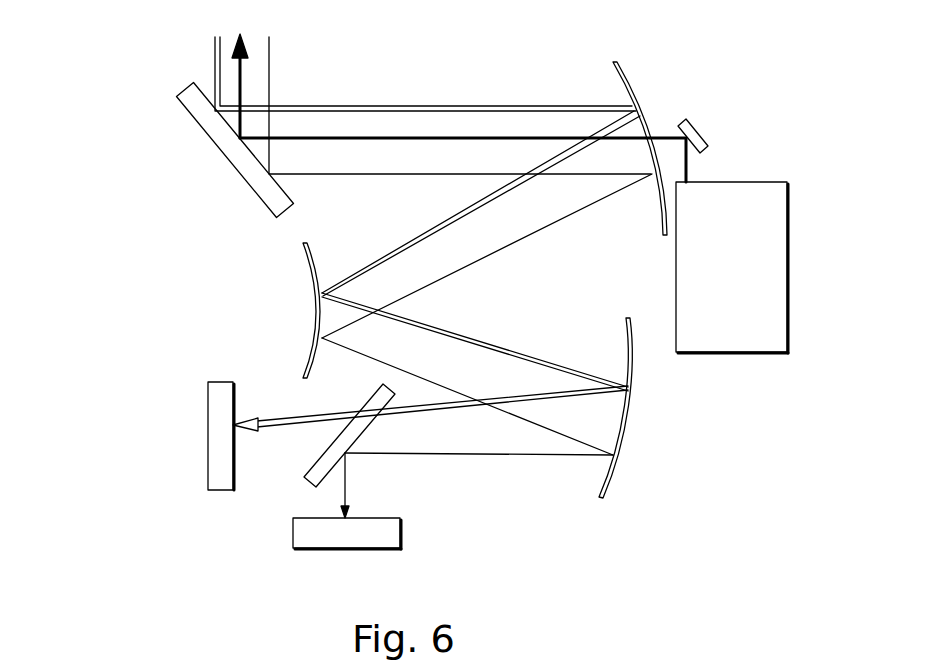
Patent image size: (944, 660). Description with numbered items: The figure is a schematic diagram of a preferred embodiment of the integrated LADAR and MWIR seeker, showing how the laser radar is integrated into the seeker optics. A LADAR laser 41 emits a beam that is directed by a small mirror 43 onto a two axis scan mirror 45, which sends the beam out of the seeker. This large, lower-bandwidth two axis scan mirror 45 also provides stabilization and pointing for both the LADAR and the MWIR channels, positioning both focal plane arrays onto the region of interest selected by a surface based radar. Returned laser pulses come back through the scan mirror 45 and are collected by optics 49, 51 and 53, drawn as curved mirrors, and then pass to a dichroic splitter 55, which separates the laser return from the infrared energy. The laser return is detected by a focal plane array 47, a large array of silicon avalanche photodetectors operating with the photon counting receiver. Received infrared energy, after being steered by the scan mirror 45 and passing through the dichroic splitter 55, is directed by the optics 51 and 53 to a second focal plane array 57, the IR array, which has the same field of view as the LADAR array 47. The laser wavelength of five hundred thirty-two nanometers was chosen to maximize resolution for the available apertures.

The LADAR laser 41 is at (730, 353).
The mirror 43 is at (710, 141).
The two axis scan mirror 45 is at (262, 203).
The focal plane array 47 is at (328, 549).
The optics 49 is at (630, 84).
The optics 51 is at (314, 318).
The optics 53 is at (633, 430).
The dichroic splitter 55 is at (298, 488).
The second focal plane array 57 is at (208, 384).